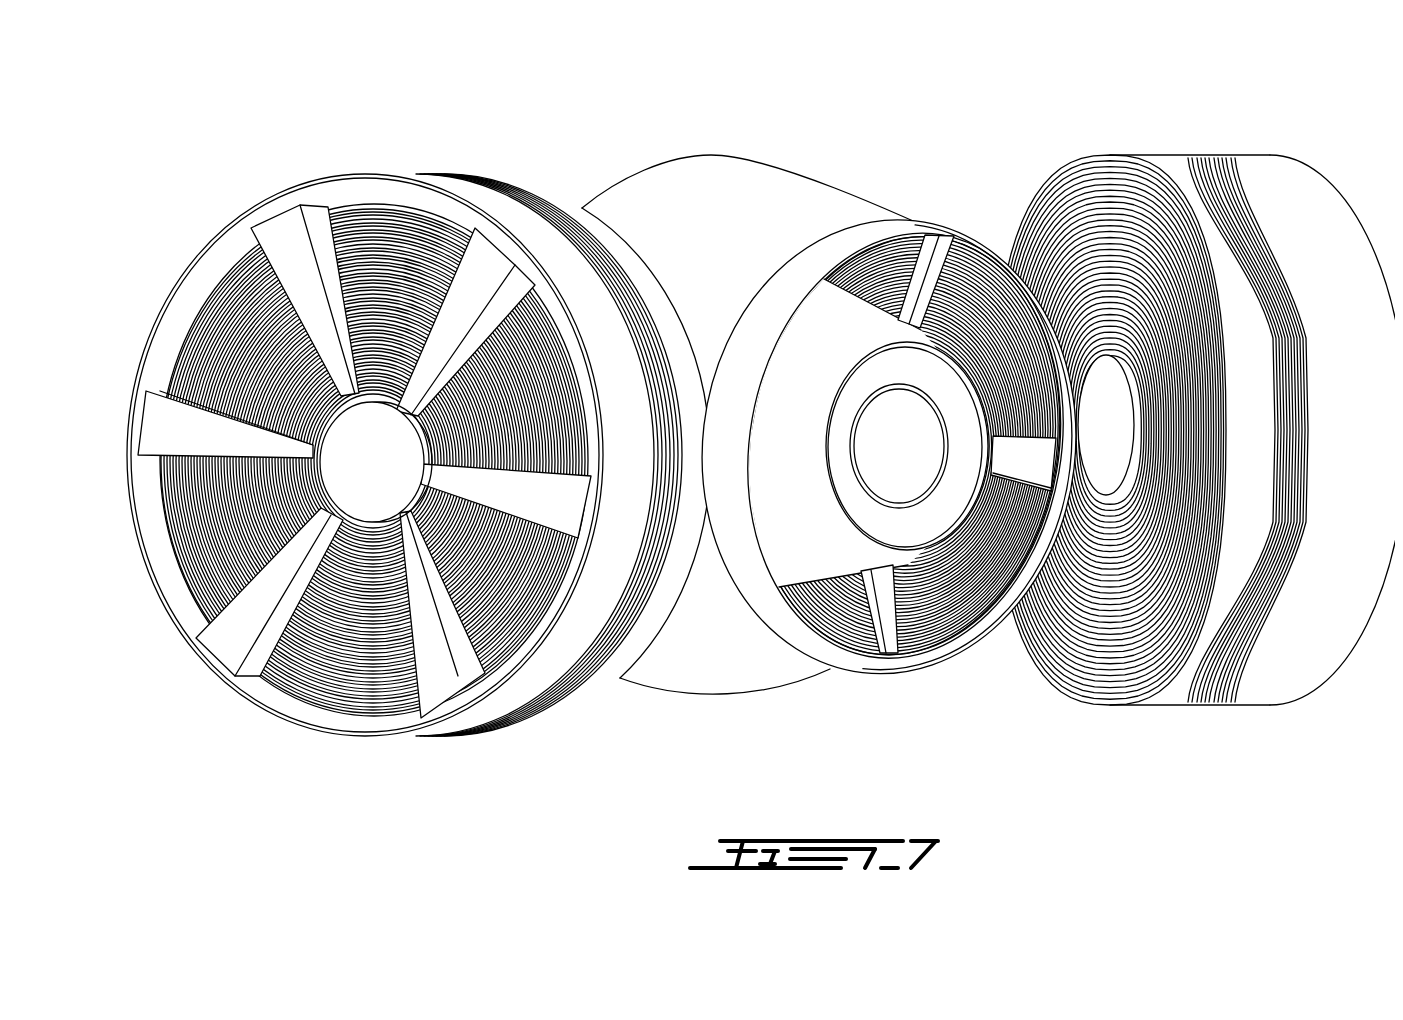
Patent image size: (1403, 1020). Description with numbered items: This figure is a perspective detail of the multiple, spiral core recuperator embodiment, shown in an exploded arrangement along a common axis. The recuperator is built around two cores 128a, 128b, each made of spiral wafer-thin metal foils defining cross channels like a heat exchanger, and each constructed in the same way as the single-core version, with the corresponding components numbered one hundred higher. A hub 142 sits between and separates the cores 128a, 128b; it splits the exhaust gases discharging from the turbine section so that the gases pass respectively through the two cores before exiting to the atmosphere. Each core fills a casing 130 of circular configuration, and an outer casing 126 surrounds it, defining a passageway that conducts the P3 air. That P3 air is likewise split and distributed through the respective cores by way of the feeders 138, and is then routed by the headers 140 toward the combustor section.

The outer casing 126 is at (503, 190).
The core 128a is at (973, 565).
The core 128b is at (348, 655).
The casing 130 is at (1035, 348).
The feeder 138 is at (1013, 445).
The header 140 is at (240, 623).
The hub 142 is at (910, 515).